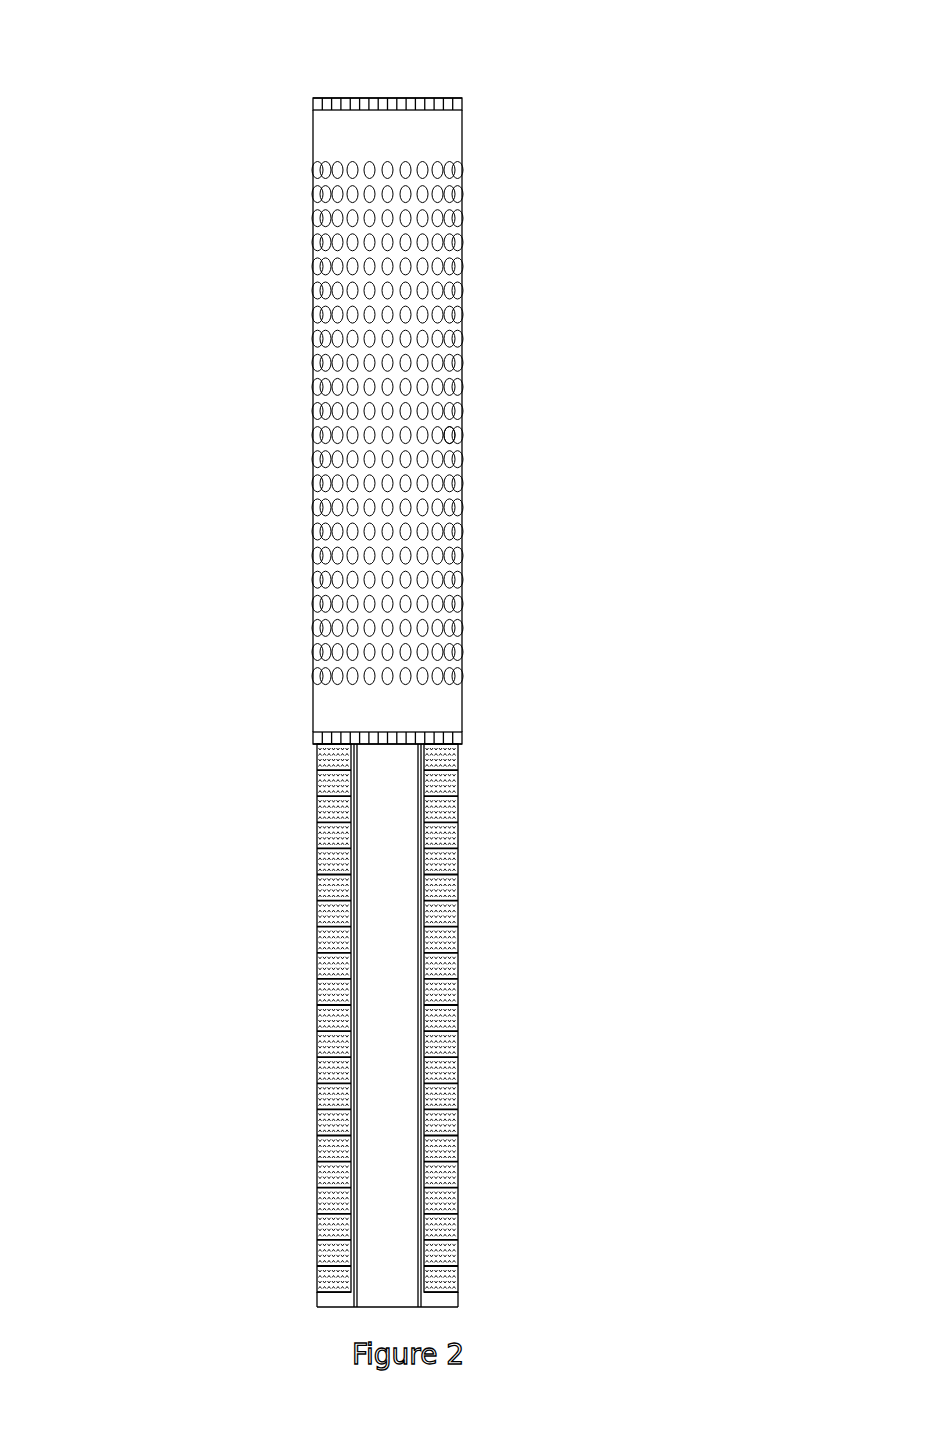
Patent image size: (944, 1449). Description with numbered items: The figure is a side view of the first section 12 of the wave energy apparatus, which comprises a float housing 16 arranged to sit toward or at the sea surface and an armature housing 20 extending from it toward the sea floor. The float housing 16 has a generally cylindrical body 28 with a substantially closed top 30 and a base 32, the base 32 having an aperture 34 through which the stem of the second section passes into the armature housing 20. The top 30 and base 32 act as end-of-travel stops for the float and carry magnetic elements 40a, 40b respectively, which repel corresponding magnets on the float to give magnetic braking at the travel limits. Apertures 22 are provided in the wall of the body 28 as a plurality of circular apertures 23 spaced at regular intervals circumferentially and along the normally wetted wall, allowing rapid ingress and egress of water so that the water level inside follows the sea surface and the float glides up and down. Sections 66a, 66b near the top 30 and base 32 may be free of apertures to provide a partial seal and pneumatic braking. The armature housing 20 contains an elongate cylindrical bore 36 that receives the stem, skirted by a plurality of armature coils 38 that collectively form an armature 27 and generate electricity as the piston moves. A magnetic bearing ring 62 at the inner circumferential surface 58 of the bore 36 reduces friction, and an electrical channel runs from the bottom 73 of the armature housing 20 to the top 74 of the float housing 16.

The first section 12 is at (633, 214).
The float housing 16 is at (460, 360).
The armature housing 20 is at (458, 862).
The apertures 22 is at (314, 372).
The circular apertures 23 is at (448, 427).
The armature 27 is at (317, 898).
The cylindrical body 28 is at (462, 493).
The top 30 is at (462, 105).
The base 32 is at (458, 743).
The aperture 34 is at (384, 743).
The elongate cylindrical bore 36 is at (383, 1018).
The armature coils 38 is at (317, 942).
The magnetic element 40a is at (318, 101).
The magnetic element 40b is at (366, 733).
The inner circumferential surface 58 is at (457, 1077).
The magnetic bearing ring 62 is at (457, 1195).
The aperture-free section 66a is at (447, 163).
The aperture-free section 66b is at (447, 700).
The bottom 73 is at (402, 1303).
The top 74 is at (362, 103).